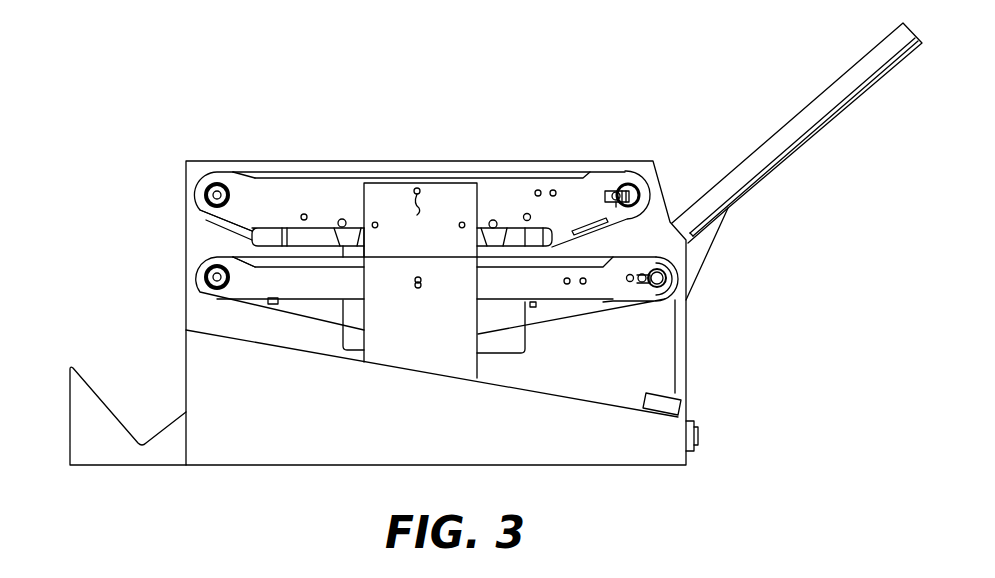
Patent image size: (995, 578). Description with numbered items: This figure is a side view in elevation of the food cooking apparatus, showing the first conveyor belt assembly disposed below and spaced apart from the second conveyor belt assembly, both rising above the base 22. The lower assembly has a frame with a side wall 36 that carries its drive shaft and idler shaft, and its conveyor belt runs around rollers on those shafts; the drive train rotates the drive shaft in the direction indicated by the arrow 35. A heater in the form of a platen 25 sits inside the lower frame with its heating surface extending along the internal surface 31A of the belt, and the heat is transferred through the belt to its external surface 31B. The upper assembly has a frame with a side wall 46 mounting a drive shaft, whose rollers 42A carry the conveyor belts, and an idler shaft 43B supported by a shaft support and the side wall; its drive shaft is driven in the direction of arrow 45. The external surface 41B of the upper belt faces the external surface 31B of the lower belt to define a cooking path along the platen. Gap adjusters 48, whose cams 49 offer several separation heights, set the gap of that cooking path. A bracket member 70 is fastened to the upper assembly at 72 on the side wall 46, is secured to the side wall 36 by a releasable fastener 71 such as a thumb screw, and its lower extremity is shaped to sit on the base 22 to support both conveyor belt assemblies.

The base 22 is at (656, 448).
The platen 25 is at (555, 263).
The internal surface 31A is at (607, 258).
The external surface 31B is at (593, 225).
The arrow 35 is at (196, 243).
The side wall 36 is at (295, 283).
The external surface 41B is at (538, 180).
The rollers 42A is at (215, 177).
The first idler shaft 43B is at (615, 197).
The arrow 45 is at (200, 227).
The side wall 46 is at (275, 190).
The gap adjusters 48 is at (342, 219).
The cams 49 is at (350, 242).
The bracket member 70 is at (405, 345).
The releasable fastener 71 is at (418, 288).
The fastening location 72 is at (459, 225).